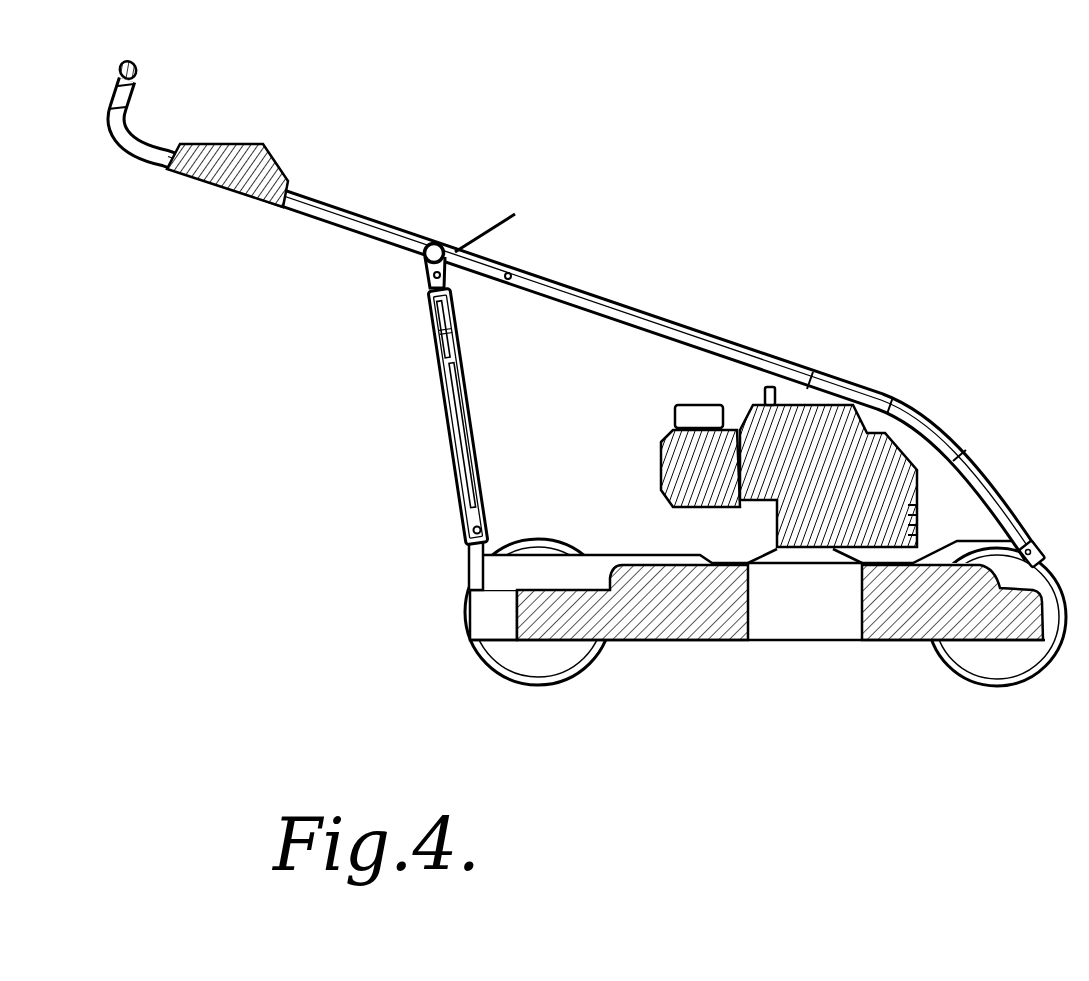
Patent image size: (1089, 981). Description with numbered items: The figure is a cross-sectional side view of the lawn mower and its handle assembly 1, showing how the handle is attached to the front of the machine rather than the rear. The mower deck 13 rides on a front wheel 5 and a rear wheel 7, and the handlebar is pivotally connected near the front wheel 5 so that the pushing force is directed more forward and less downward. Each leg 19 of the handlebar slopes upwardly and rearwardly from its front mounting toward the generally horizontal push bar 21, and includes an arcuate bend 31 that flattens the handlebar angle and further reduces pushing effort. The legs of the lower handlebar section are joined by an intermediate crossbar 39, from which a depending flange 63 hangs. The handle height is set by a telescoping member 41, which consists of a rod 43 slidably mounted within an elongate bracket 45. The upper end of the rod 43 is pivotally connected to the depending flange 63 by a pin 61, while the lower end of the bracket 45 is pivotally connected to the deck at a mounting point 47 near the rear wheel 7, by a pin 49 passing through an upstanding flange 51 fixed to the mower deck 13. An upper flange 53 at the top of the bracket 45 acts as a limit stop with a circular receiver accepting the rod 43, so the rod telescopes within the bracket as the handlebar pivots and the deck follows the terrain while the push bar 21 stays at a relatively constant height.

The handle assembly 1 is at (815, 340).
The front wheel 5 is at (962, 682).
The rear wheel 7 is at (570, 676).
The mower deck 13 is at (470, 612).
The leg 19 is at (576, 296).
The push bar 21 is at (136, 64).
The arcuate bend 31 is at (945, 420).
The intermediate crossbar 39 is at (435, 243).
The telescoping member 41 is at (502, 416).
The rod 43 is at (455, 313).
The bracket 45 is at (467, 406).
The mounting point 47 is at (520, 525).
The pin 49 is at (470, 527).
The upstanding flange 51 is at (469, 560).
The upper flange 53 is at (511, 276).
The pin 61 is at (433, 277).
The depending flange 63 is at (504, 211).